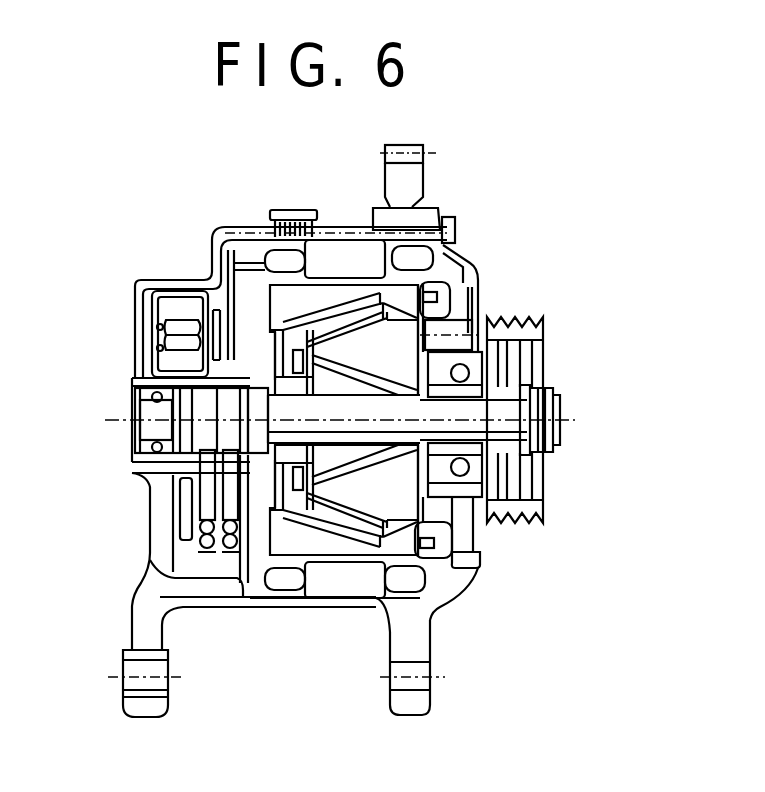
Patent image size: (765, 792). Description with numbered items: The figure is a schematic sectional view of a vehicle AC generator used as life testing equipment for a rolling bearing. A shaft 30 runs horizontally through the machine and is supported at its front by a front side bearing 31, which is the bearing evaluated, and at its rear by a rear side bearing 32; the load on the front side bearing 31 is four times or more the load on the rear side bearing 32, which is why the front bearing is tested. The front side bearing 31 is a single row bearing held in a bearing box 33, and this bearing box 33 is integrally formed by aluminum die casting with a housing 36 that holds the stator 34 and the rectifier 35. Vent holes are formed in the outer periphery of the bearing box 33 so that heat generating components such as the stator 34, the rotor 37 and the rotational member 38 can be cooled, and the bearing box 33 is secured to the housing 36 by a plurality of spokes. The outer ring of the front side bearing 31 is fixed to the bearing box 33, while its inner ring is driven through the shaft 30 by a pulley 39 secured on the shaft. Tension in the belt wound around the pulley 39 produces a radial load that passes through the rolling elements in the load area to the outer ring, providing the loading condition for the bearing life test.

The shaft 30 is at (365, 440).
The front side bearing 31 is at (460, 485).
The rear side bearing 32 is at (152, 490).
The bearing box 33 is at (460, 320).
The stator 34 is at (355, 250).
The rectifier 35 is at (178, 300).
The housing 36 is at (245, 226).
The rotor 37 is at (398, 327).
The rotational member 38 is at (292, 297).
The pulley 39 is at (520, 320).